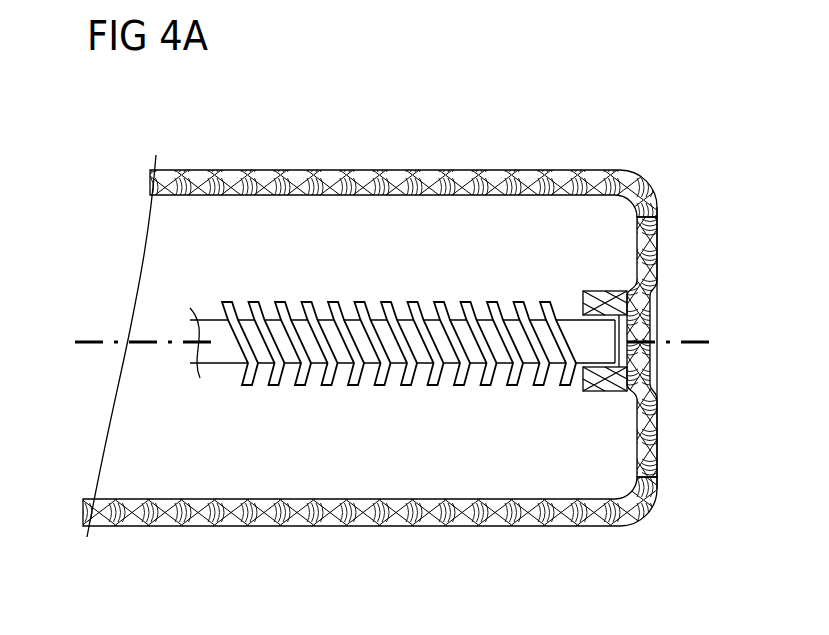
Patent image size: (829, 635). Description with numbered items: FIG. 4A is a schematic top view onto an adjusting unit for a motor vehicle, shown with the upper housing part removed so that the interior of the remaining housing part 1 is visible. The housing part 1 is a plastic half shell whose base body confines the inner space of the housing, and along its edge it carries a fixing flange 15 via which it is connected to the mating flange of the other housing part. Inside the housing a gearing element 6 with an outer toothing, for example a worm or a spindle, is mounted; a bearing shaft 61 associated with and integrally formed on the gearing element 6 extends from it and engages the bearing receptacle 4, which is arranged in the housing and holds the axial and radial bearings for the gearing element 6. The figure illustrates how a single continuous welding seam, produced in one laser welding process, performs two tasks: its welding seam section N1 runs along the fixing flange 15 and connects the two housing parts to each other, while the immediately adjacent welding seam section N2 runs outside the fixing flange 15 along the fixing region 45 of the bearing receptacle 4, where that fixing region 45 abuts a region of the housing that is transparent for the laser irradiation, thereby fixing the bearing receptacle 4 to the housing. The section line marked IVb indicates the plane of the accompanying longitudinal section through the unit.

The housing part 1 is at (408, 337).
The fixing flange 15 is at (408, 350).
The welding seam section N1 is at (408, 350).
The welding seam section N2 is at (647, 332).
The bearing receptacle 4 is at (595, 299).
The fixing region 45 is at (588, 292).
The gearing element 6 is at (400, 396).
The bearing shaft 61 is at (577, 343).
The section line IVb is at (87, 370).